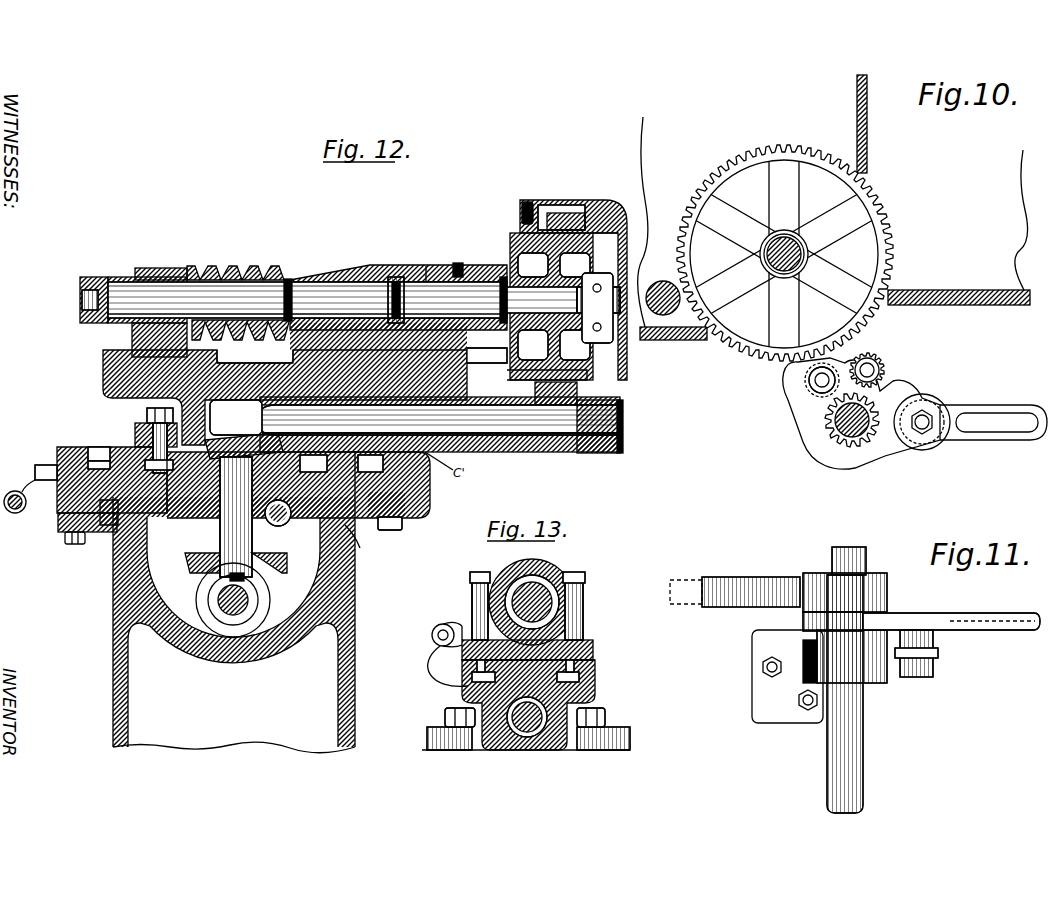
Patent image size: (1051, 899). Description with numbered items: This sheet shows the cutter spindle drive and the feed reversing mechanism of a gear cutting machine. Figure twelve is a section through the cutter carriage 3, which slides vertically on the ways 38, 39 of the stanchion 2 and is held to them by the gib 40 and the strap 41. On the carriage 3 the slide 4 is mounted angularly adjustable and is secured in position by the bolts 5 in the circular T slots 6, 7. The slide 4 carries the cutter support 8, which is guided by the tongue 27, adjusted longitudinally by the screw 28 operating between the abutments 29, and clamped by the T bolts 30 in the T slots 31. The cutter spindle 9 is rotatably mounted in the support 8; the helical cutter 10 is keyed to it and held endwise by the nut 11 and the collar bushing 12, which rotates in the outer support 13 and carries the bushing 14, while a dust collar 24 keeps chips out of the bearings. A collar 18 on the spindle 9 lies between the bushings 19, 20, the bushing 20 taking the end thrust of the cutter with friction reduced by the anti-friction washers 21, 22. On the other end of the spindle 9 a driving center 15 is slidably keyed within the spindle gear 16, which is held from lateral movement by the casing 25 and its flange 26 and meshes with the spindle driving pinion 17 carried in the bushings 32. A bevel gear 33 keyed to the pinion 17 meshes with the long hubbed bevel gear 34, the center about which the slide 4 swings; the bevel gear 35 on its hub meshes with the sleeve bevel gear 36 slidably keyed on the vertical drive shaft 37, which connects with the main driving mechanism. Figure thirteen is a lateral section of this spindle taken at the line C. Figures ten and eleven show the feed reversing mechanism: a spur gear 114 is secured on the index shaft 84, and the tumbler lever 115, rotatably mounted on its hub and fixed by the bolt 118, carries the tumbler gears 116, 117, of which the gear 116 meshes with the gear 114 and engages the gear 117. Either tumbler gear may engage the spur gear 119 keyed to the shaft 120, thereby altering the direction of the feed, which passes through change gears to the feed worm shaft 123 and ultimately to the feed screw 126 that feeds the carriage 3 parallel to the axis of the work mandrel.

In FIG. 12, the stanchion 2 is at (355, 600).
In FIG. 12, the cutter carriage 3 is at (66, 452).
In FIG. 12, the slide 4 is at (103, 374).
In FIG. 12, the bolts 5 is at (146, 427).
In FIG. 13, the bolts 5 is at (446, 715).
In FIG. 12, the circular T slot 6 is at (100, 450).
In FIG. 13, the circular T slot 6 is at (595, 652).
In FIG. 12, the circular T slot 7 is at (165, 480).
In FIG. 13, the circular T slot 7 is at (596, 694).
In FIG. 12, the cutter support 8 is at (293, 349).
In FIG. 12, the cutter spindle 9 is at (318, 290).
In FIG. 13, the cutter spindle 9 is at (536, 590).
In FIG. 12, the helical cutter 10 is at (216, 270).
In FIG. 12, the nut 11 is at (91, 282).
In FIG. 12, the collar bushing 12 is at (120, 277).
In FIG. 12, the outer support 13 is at (158, 264).
In FIG. 12, the bushing 14 is at (132, 324).
In FIG. 12, the driving center 15 is at (590, 378).
In FIG. 12, the spindle gear 16 is at (566, 217).
In FIG. 12, the spindle driving pinion 17 is at (578, 448).
In FIG. 12, the collar 18 is at (394, 277).
In FIG. 12, the bushing 19 is at (358, 268).
In FIG. 12, the bushing 20 is at (457, 263).
In FIG. 12, the anti-friction washer 21 is at (402, 279).
In FIG. 12, the anti-friction washer 22 is at (503, 277).
In FIG. 12, the dust collar 24 is at (289, 279).
In FIG. 12, the casing 25 is at (613, 232).
In FIG. 12, the flange 26 is at (522, 212).
In FIG. 13, the tongue 27 is at (562, 650).
In FIG. 13, the screw 28 is at (432, 638).
In FIG. 12, the abutments 29 is at (598, 279).
In FIG. 13, the abutments 29 is at (460, 626).
In FIG. 13, the T bolts 30 is at (478, 574).
In FIG. 13, the T slots 31 is at (472, 679).
In FIG. 12, the bushings 32 is at (505, 446).
In FIG. 12, the bevel gear 33 is at (262, 402).
In FIG. 12, the long hubbed bevel gear 34 is at (210, 445).
In FIG. 12, the bevel gear 35 is at (280, 568).
In FIG. 12, the sleeve bevel gear 36 is at (270, 600).
In FIG. 12, the vertical drive shaft 37 is at (222, 598).
In FIG. 12, the way 38 is at (98, 515).
In FIG. 12, the way 39 is at (360, 522).
In FIG. 12, the gib 40 is at (402, 519).
In FIG. 12, the strap 41 is at (57, 527).
In FIG. 10, the index shaft 84 is at (842, 424).
In FIG. 11, the index shaft 84 is at (864, 772).
In FIG. 10, the spur gear 114 is at (856, 450).
In FIG. 10, the tumbler lever 115 is at (966, 438).
In FIG. 11, the tumbler lever 115 is at (962, 632).
In FIG. 10, the tumbler gear 116 is at (812, 385).
In FIG. 10, the tumbler gear 117 is at (885, 366).
In FIG. 10, the bolt 118 is at (923, 436).
In FIG. 11, the bolt 118 is at (916, 680).
In FIG. 10, the spur gear 119 is at (893, 250).
In FIG. 11, the spur gear 119 is at (738, 608).
In FIG. 10, the shaft 120 is at (775, 245).
In FIG. 10, the feed worm shaft 123 is at (663, 281).
In FIG. 12, the feed screw 126 is at (286, 519).
In FIG. 12, the section line C is at (426, 265).